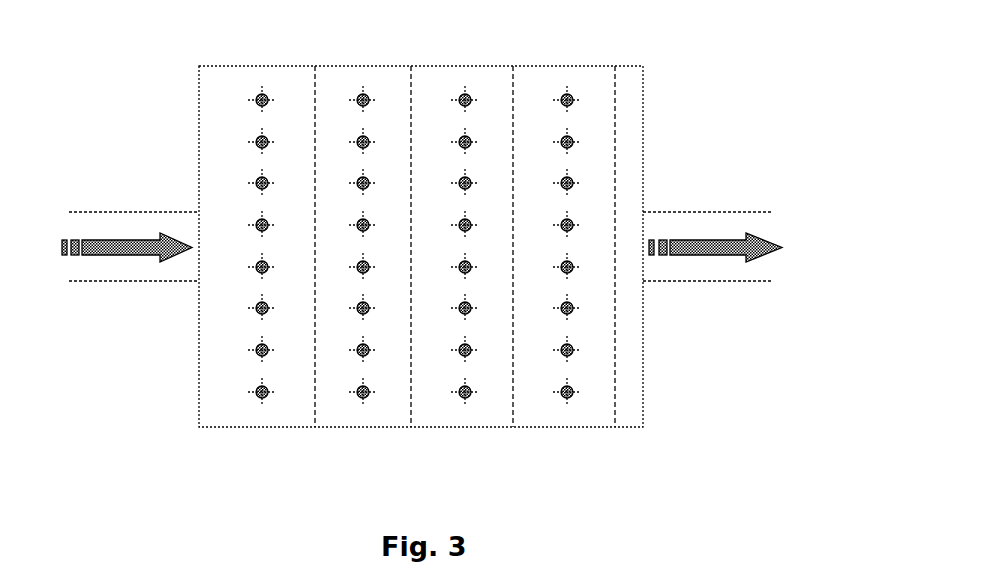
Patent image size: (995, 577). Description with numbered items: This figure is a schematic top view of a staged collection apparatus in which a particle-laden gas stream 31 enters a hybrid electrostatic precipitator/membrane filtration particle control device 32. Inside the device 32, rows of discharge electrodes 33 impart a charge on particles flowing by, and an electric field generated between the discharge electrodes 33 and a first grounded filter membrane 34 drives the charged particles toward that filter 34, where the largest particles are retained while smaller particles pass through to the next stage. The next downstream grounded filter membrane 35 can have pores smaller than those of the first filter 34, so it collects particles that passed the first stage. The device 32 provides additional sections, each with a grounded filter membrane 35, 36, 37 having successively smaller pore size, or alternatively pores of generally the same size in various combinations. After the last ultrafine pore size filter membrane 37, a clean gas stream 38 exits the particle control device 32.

The particle-laden gas stream 31 is at (120, 246).
The hybrid electrostatic precipitator/membrane filtration particle control device 32 is at (198, 407).
The discharge electrodes 33 is at (255, 94).
The first grounded filter membrane 34 is at (314, 408).
The downstream grounded filter membrane 35 is at (410, 408).
The grounded filter membrane 36 is at (512, 408).
The ultrafine pore size filter membrane 37 is at (614, 408).
The clean gas stream 38 is at (712, 246).